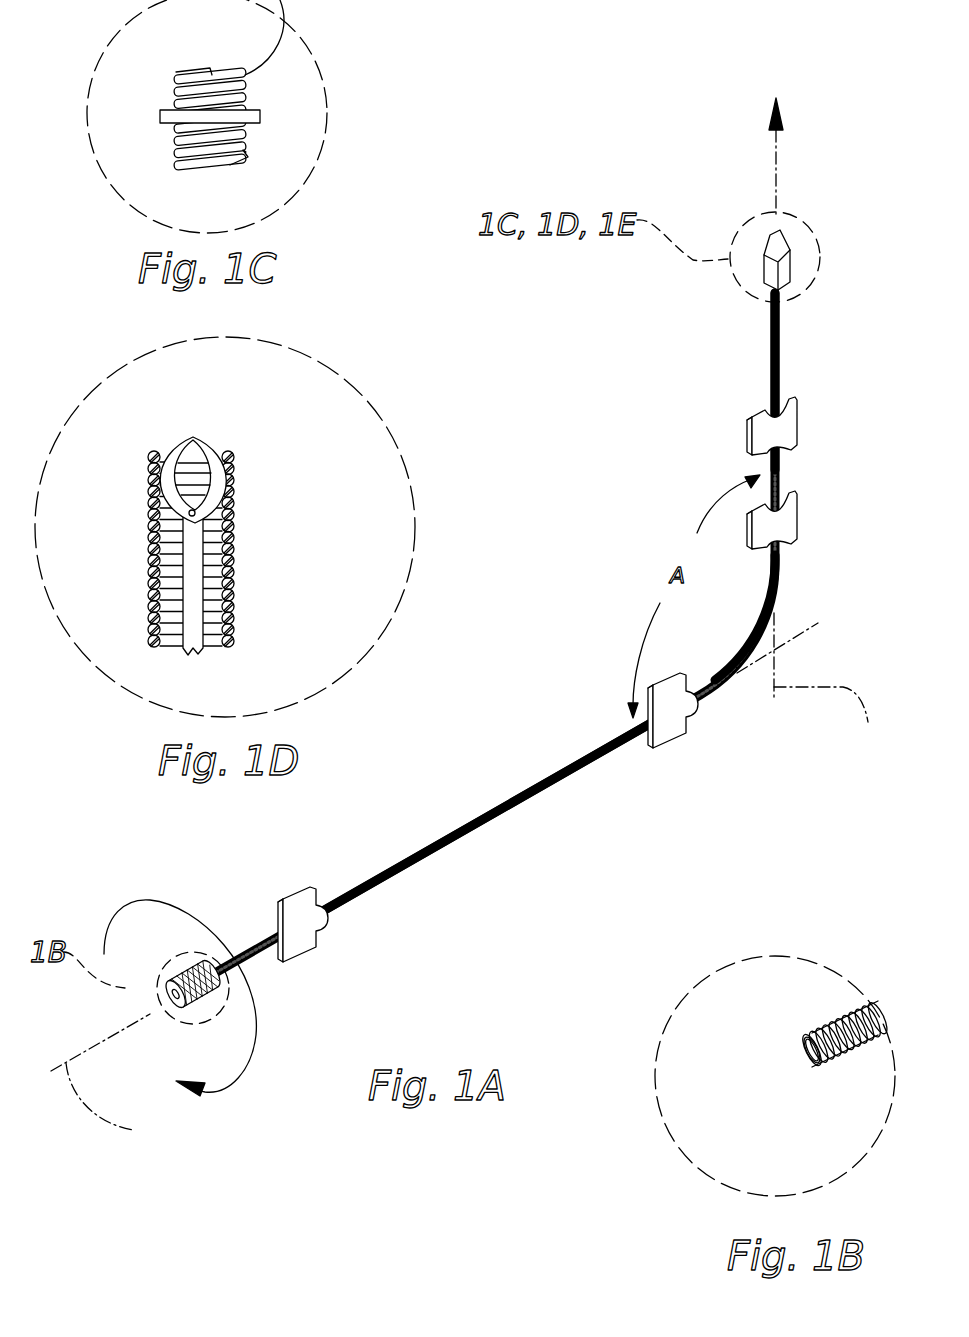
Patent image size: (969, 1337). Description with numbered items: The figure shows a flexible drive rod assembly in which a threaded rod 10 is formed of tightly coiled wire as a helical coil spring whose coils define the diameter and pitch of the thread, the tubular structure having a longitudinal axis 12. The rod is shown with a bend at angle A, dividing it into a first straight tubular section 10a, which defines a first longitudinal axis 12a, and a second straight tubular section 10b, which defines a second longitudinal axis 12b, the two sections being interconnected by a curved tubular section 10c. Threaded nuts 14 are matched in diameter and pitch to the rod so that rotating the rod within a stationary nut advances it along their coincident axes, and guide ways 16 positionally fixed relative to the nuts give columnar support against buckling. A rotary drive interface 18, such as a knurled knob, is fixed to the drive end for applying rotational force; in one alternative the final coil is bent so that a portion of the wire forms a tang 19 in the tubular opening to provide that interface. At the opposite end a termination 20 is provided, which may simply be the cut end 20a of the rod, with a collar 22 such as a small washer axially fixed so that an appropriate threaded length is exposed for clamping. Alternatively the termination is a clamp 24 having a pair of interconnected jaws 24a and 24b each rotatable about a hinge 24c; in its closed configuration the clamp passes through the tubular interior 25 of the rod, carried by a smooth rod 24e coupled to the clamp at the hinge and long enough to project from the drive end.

In FIG. 1A, the threaded rod 10 is at (532, 708).
In FIG. 1B, the threaded rod 10 is at (840, 1013).
In FIG. 1D, the threaded rod 10 is at (235, 593).
In FIG. 1A, the first straight tubular section 10a is at (443, 848).
In FIG. 1A, the second straight tubular section 10b is at (780, 338).
In FIG. 1A, the curved tubular section 10c is at (778, 572).
In FIG. 1A, the longitudinal axis 12 is at (111, 1080).
In FIG. 1A, the first longitudinal axis 12a is at (800, 633).
In FIG. 1A, the second longitudinal axis 12b is at (834, 682).
In FIG. 1A, the threaded nut 14 is at (790, 512).
In FIG. 1A, the guide way 16 is at (797, 415).
In FIG. 1A, the rotary drive interface 18 is at (199, 1010).
In FIG. 1B, the tang 19 is at (803, 1052).
In FIG. 1A, the termination 20 is at (787, 245).
In FIG. 1C, the cut end 20a is at (173, 88).
In FIG. 1C, the collar 22 is at (160, 115).
In FIG. 1D, the clamp 24 is at (223, 430).
In FIG. 1D, the jaw 24a is at (166, 437).
In FIG. 1D, the jaw 24b is at (207, 440).
In FIG. 1D, the hinge 24c is at (200, 515).
In FIG. 1D, the smooth rod 24e is at (193, 630).
In FIG. 1D, the tubular interior 25 is at (172, 655).